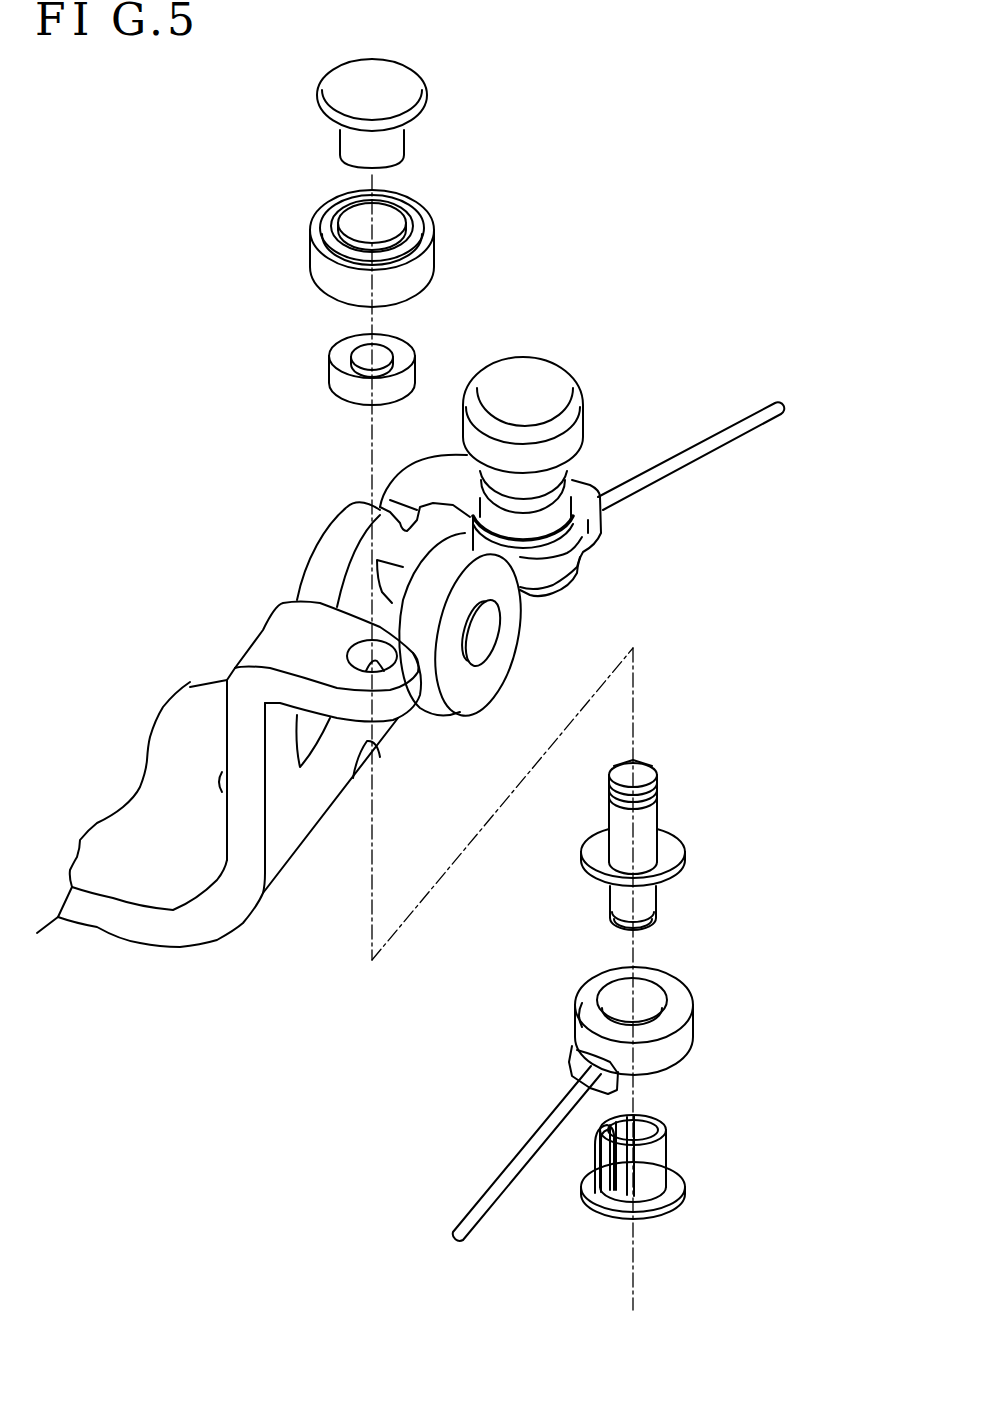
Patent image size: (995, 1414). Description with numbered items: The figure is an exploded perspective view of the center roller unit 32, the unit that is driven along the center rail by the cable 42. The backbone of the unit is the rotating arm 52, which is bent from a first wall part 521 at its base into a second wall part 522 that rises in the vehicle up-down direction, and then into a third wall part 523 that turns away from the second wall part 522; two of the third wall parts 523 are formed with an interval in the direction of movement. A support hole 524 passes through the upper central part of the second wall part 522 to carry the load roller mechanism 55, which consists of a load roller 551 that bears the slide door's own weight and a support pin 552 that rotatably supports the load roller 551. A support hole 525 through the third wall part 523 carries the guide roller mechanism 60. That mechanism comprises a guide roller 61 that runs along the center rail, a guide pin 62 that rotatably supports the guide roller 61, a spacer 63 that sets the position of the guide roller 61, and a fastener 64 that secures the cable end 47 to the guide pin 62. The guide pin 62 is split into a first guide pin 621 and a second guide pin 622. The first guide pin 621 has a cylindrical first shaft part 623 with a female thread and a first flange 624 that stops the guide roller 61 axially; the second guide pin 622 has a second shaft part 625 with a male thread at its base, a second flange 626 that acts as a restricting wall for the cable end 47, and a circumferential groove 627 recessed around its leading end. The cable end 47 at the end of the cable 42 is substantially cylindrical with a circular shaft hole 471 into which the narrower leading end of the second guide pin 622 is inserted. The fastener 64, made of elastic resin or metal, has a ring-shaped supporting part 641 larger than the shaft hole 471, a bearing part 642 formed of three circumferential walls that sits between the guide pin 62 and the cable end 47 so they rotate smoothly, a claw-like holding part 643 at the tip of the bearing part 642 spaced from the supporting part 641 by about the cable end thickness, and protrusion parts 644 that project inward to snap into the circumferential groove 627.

The center roller unit 32 is at (146, 162).
The cable 42 is at (728, 422).
The cable end 47 is at (570, 563).
The shaft hole 471 is at (650, 997).
The rotating arm 52 is at (253, 701).
The first wall part 521 is at (113, 890).
The second wall part 522 is at (233, 832).
The third wall part 523 is at (290, 637).
The support hole 524 is at (353, 590).
The support hole 525 is at (377, 660).
The load roller mechanism 55 is at (493, 659).
The load roller 551 is at (483, 697).
The support pin 552 is at (495, 633).
The guide roller mechanism 60 is at (292, 86).
The guide roller 61 is at (433, 240).
The guide pin 62 is at (517, 493).
The first guide pin 621 is at (436, 91).
The second guide pin 622 is at (664, 795).
The first shaft part 623 is at (408, 135).
The first flange 624 is at (407, 63).
The second shaft part 625 is at (608, 812).
The second flange 626 is at (685, 855).
The circumferential groove 627 is at (657, 915).
The spacer 63 is at (417, 340).
The fastener 64 is at (696, 1180).
The supporting part 641 is at (582, 1193).
The bearing part 642 is at (652, 1190).
The holding part 643 is at (663, 1142).
The protrusion part 644 is at (625, 1200).